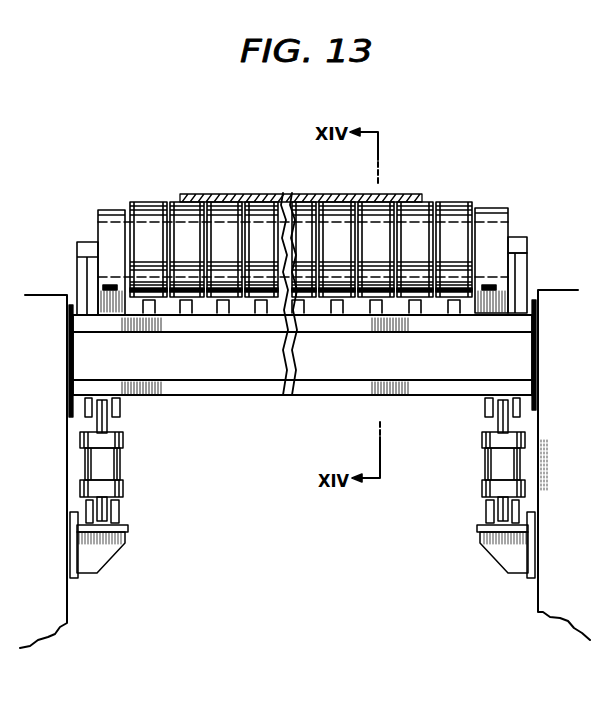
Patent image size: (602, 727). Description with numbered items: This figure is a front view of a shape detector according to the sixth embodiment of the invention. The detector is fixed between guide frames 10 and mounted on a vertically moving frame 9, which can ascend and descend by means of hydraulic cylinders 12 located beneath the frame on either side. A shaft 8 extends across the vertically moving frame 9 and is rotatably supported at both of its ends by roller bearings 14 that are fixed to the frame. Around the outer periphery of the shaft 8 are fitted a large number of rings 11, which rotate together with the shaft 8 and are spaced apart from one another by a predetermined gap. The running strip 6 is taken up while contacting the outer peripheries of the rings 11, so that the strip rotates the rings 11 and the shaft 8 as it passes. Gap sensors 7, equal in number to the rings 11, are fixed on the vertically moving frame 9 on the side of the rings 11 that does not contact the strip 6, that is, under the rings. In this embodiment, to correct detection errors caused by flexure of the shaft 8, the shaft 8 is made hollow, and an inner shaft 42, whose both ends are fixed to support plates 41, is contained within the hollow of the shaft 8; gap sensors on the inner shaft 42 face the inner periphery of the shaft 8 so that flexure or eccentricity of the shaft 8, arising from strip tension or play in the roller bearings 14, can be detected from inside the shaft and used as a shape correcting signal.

The running strip 6 is at (265, 194).
The gap sensors 7 is at (453, 307).
The shaft 8 is at (125, 245).
The vertically moving frame 9 is at (232, 367).
The guide frames 10 is at (42, 305).
The rings 11 is at (453, 202).
The hydraulic cylinders 12 is at (126, 469).
The roller bearings 14 is at (110, 230).
The support plates 41 is at (523, 270).
The shaft 42 is at (518, 242).